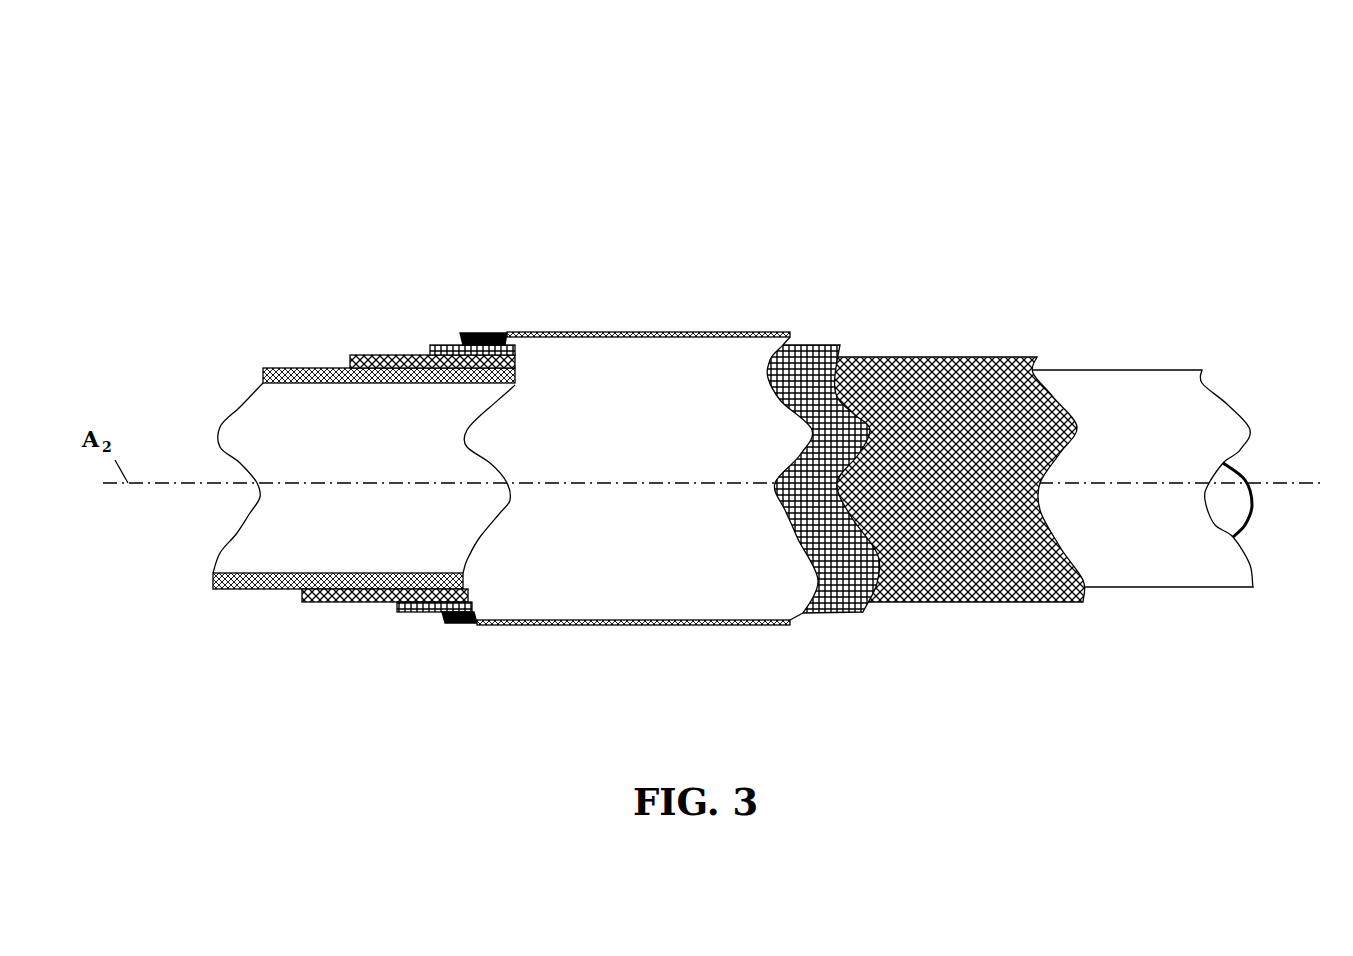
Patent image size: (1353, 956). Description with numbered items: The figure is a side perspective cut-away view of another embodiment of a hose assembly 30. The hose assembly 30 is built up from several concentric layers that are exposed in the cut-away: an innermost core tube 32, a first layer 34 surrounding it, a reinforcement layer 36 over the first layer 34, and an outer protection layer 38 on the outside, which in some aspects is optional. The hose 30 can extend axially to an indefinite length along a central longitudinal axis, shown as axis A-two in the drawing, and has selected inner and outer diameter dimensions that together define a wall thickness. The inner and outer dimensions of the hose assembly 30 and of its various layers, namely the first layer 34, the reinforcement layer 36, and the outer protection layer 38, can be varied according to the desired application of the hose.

The hose assembly 30 is at (1215, 100).
The core tube 32 is at (317, 368).
The first layer 34 is at (364, 355).
The reinforcement layer 36 is at (440, 345).
The outer protection layer 38 is at (482, 333).